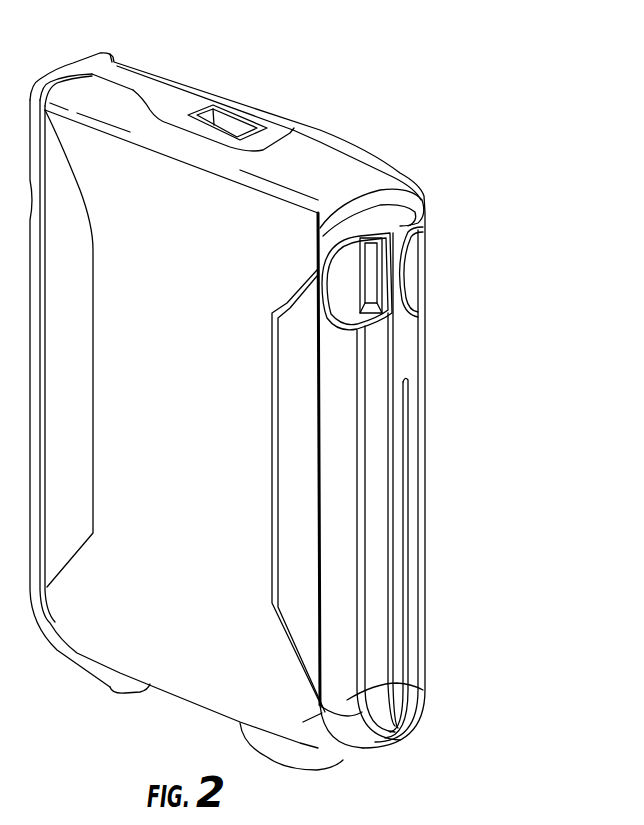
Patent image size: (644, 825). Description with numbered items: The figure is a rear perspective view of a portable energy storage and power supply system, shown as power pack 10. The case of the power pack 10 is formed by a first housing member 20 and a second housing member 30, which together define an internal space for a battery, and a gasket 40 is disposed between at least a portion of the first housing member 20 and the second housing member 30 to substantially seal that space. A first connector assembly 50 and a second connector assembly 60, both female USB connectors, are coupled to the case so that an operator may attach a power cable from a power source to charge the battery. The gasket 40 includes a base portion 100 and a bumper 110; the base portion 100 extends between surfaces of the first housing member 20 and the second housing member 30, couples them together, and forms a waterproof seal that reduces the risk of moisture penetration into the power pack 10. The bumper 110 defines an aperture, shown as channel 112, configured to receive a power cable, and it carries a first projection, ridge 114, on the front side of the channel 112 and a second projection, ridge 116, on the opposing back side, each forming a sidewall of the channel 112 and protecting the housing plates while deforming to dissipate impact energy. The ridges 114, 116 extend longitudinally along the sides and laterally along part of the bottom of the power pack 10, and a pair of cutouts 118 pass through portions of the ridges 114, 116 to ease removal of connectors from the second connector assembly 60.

The power pack 10 is at (488, 137).
The first housing member 20 is at (348, 157).
The second housing member 30 is at (302, 722).
The gasket 40 is at (75, 56).
The first connector assembly 50 is at (249, 100).
The second connector assembly 60 is at (380, 325).
The base portion 100 is at (155, 92).
The bumper 110 is at (440, 201).
The channel 112 is at (382, 505).
The ridge 114 is at (417, 563).
The ridge 116 is at (395, 712).
The cutouts 118 is at (420, 294).